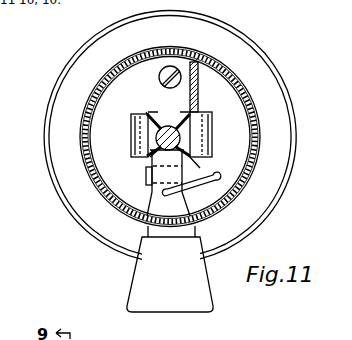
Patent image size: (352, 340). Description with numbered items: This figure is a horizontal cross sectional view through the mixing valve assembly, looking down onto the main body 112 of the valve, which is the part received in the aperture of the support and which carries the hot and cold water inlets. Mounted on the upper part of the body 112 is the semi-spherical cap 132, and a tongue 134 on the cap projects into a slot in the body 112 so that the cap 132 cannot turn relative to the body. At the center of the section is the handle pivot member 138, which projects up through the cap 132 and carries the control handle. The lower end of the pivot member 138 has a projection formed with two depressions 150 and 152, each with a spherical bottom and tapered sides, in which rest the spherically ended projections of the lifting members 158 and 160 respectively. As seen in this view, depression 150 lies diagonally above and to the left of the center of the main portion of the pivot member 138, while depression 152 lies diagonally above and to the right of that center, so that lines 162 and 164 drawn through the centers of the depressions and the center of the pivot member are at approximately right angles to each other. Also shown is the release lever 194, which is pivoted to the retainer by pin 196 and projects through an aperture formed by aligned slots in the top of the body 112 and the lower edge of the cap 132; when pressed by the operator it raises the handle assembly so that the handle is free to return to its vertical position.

The main body 112 is at (278, 189).
The semi-spherical cap 132 is at (258, 118).
The tongue 134 is at (192, 18).
The handle pivot member 138 is at (147, 148).
The depression 150 is at (145, 105).
The depression 152 is at (208, 101).
The lifting member 158 is at (131, 124).
The lifting member 160 is at (212, 143).
The line 162 is at (222, 88).
The line 164 is at (104, 72).
The release lever 194 is at (153, 268).
The pin 196 is at (140, 178).